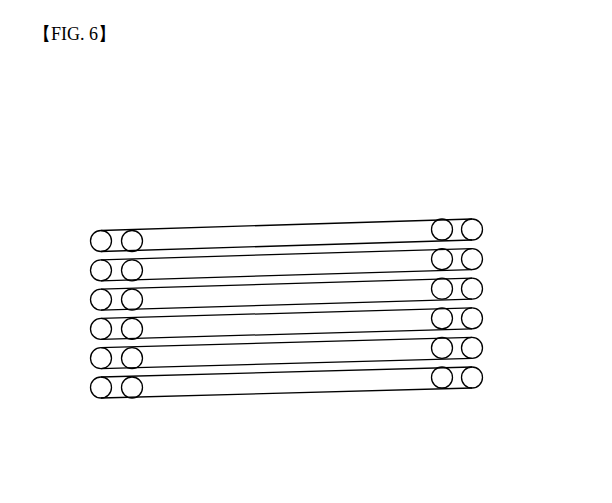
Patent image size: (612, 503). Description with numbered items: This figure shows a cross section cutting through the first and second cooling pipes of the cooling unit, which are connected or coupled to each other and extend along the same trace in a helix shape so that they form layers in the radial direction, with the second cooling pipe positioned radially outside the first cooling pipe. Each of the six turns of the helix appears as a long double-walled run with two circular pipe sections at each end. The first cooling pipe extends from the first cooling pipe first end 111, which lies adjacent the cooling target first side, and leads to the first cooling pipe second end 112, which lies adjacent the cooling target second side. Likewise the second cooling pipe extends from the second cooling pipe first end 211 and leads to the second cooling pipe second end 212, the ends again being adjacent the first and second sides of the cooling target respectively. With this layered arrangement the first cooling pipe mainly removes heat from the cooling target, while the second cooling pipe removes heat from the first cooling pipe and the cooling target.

The first cooling pipe second end 112 is at (442, 227).
The second cooling pipe second end 212 is at (470, 227).
The second cooling pipe first end 211 is at (100, 388).
The first cooling pipe first end 111 is at (133, 387).